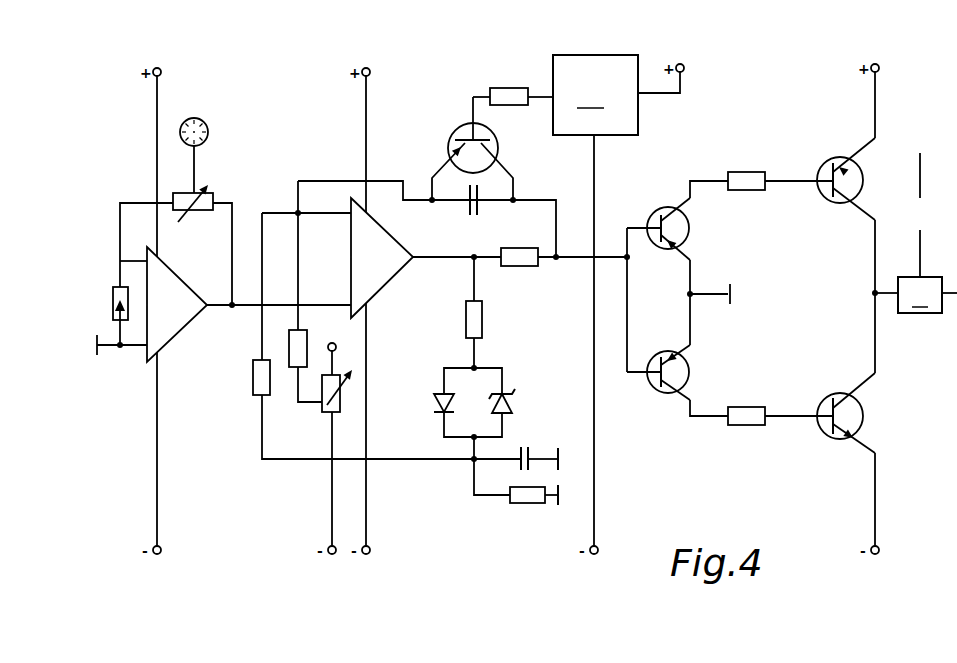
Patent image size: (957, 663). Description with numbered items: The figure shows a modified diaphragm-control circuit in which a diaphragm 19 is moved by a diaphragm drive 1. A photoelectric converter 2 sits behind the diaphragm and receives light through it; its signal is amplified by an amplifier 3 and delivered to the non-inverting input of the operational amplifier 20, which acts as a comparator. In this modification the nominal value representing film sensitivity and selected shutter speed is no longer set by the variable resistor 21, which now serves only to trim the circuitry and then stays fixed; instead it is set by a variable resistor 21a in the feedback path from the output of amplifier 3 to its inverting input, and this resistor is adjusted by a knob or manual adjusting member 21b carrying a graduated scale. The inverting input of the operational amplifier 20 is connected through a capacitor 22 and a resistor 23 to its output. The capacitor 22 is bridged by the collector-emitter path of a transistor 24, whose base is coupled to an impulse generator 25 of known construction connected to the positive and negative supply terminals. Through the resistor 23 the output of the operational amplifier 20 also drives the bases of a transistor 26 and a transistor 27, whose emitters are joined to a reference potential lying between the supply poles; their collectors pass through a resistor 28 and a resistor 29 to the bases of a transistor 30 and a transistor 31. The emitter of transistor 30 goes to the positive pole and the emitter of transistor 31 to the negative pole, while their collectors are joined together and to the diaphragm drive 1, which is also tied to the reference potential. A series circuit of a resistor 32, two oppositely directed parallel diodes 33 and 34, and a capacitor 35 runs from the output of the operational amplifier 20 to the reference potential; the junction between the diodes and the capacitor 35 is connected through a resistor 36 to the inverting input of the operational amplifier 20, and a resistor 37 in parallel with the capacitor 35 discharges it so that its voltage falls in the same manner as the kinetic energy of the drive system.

The diaphragm drive 1 is at (920, 295).
The photoelectric converter 2 is at (118, 287).
The amplifier 3 is at (177, 328).
The diaphragm 19 is at (921, 177).
The operational amplifier 20 is at (384, 228).
The variable resistor 21 is at (331, 410).
The variable resistor 21a is at (214, 200).
The manual adjusting member 21b is at (209, 130).
The capacitor 22 is at (472, 216).
The resistor 23 is at (526, 264).
The transistor 24 is at (498, 148).
The impulse generator 25 is at (595, 95).
The transistor 26 is at (668, 206).
The transistor 27 is at (690, 372).
The resistor 28 is at (752, 188).
The resistor 29 is at (750, 424).
The transistor 30 is at (840, 156).
The transistor 31 is at (840, 437).
The resistor 32 is at (466, 322).
The diode 33 is at (438, 402).
The diode 34 is at (512, 400).
The capacitor 35 is at (530, 454).
The resistor 36 is at (256, 388).
The resistor 37 is at (532, 502).